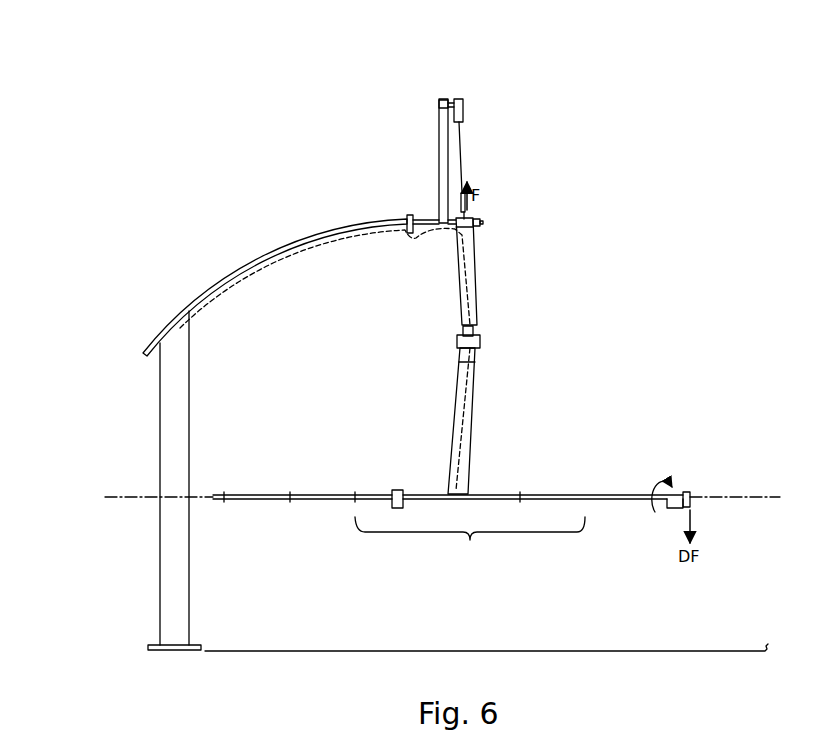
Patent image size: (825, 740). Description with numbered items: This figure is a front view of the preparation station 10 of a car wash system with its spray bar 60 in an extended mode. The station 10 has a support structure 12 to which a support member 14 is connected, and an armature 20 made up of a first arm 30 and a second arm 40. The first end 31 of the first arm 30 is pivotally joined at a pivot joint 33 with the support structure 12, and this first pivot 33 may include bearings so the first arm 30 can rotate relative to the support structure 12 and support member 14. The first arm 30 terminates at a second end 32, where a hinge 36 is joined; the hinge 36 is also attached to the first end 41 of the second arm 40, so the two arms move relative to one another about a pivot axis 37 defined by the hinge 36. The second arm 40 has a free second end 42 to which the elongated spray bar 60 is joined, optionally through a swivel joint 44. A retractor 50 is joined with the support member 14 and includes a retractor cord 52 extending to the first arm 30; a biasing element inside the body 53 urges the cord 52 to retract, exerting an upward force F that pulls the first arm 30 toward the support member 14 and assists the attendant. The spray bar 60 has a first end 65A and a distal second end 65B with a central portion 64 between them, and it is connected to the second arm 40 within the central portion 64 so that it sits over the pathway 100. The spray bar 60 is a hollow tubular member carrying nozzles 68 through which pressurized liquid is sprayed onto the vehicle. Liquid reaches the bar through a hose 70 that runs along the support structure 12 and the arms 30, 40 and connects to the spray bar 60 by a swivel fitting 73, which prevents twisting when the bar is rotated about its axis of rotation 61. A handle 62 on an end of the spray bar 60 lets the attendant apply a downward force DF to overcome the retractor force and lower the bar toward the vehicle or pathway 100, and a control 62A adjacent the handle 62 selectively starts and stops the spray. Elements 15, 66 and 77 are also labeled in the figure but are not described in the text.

The preparation station 10 is at (220, 118).
The support structure 12 is at (232, 262).
The support member 14 is at (439, 135).
The pole top 15 is at (448, 100).
The armature 20 is at (540, 291).
The first arm 30 is at (458, 312).
The first end 31 is at (478, 232).
The second end 32 is at (474, 332).
The pivot joint 33 is at (410, 215).
The hinge 36 is at (484, 338).
The pivot axis 37 is at (457, 341).
The second arm 40 is at (470, 425).
The first end 41 is at (470, 353).
The second end 42 is at (455, 482).
The swivel joint 44 is at (466, 494).
The retractor 50 is at (465, 94).
The retractor cord 52 is at (459, 165).
The body 53 is at (439, 103).
The spray bar 60 is at (578, 494).
The axis of rotation 61 is at (145, 497).
The handle 62 is at (690, 500).
The control 62A is at (688, 492).
The central portion 64 is at (470, 539).
The first end 65A is at (660, 510).
The second end 65B is at (210, 497).
The rail segment 66 is at (326, 496).
The nozzles 68 is at (290, 499).
The hose 70 is at (280, 258).
The swivel fitting 73 is at (450, 498).
The rail clamp 77 is at (397, 490).
The pathway 100 is at (603, 651).